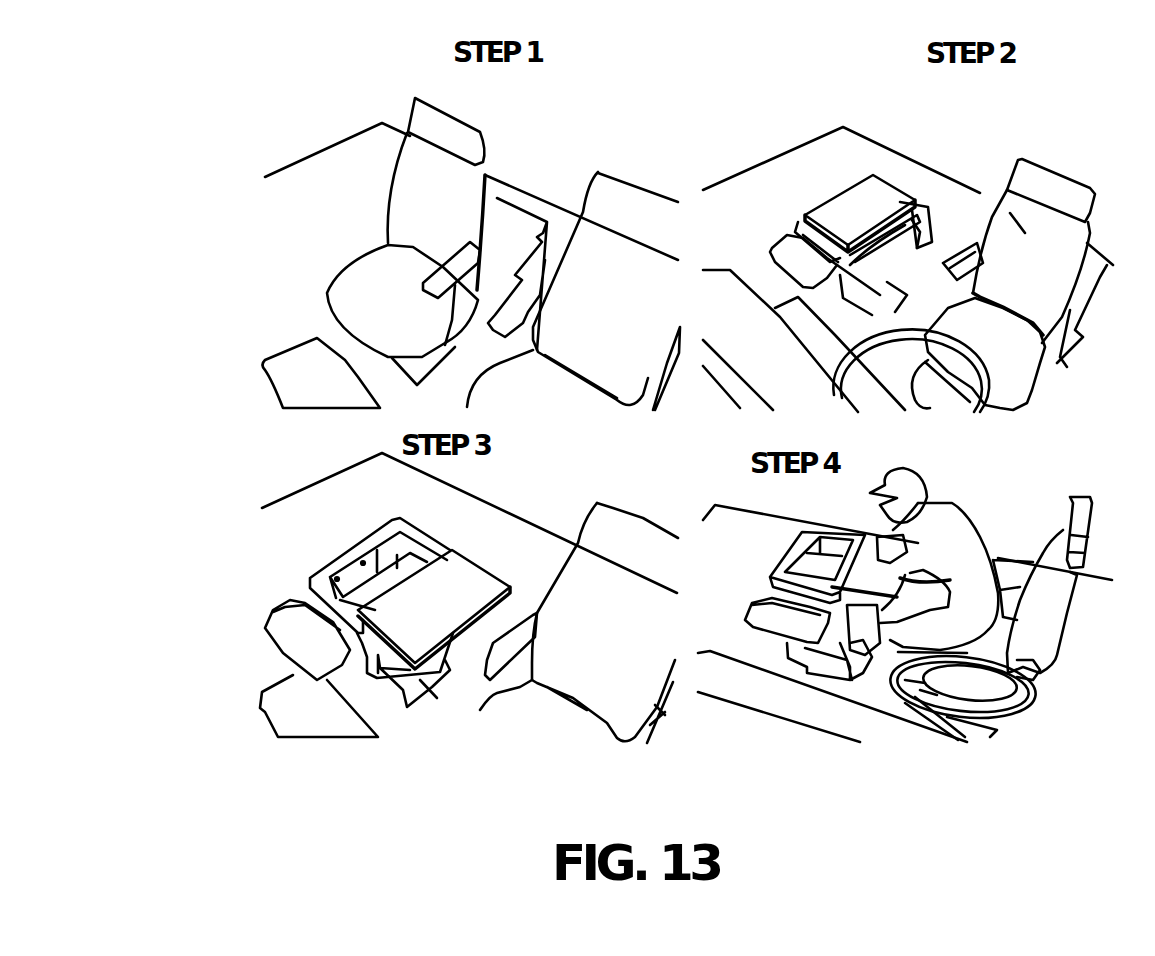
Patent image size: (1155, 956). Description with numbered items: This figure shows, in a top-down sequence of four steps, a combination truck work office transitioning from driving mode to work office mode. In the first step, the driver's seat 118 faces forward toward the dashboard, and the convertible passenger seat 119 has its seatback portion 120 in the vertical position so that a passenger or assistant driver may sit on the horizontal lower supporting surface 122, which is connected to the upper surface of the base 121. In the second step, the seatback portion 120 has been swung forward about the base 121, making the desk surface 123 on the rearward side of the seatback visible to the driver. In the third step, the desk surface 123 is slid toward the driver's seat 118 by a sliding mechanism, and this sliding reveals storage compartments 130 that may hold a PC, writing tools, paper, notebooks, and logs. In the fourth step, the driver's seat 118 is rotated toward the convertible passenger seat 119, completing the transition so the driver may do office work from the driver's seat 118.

The driver's seat 118 is at (593, 277).
The convertible passenger seat 119 is at (418, 182).
The seatback portion 120 is at (493, 172).
The base 121 is at (423, 680).
The lower supporting surface 122 is at (360, 297).
The desk surface 123 is at (863, 200).
The storage compartments 130 is at (372, 583).